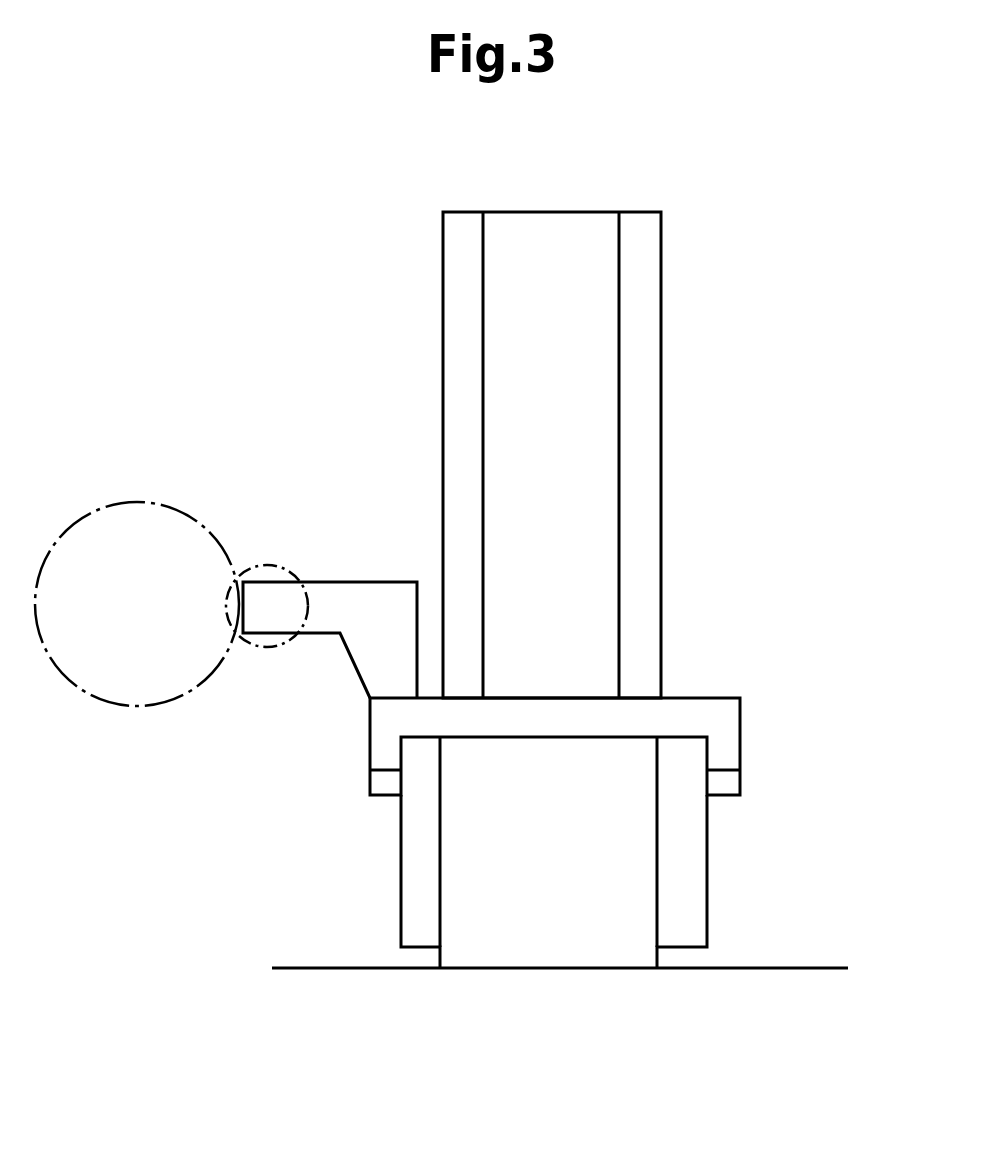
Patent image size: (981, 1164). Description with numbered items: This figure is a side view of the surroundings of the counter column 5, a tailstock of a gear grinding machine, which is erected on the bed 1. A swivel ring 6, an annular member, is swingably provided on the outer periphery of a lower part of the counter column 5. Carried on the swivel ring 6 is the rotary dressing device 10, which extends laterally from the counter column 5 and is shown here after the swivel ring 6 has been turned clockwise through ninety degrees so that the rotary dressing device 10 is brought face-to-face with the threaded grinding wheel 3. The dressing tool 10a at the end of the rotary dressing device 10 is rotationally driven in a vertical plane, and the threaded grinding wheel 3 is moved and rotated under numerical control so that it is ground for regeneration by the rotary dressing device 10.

The bed 1 is at (798, 988).
The threaded grinding wheel 3 is at (130, 668).
The counter column 5 is at (668, 377).
The swivel ring 6 is at (675, 698).
The rotary dressing device 10 is at (360, 558).
The dressing tool 10a is at (270, 565).